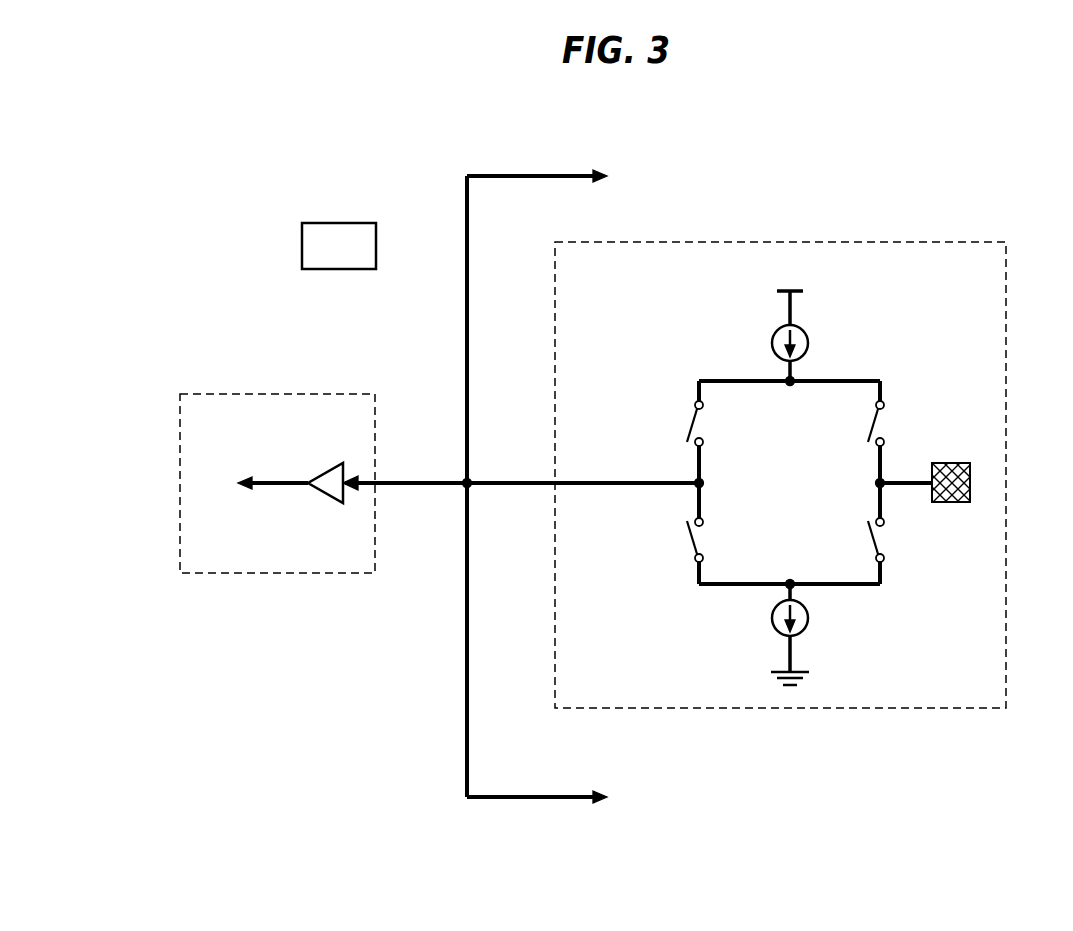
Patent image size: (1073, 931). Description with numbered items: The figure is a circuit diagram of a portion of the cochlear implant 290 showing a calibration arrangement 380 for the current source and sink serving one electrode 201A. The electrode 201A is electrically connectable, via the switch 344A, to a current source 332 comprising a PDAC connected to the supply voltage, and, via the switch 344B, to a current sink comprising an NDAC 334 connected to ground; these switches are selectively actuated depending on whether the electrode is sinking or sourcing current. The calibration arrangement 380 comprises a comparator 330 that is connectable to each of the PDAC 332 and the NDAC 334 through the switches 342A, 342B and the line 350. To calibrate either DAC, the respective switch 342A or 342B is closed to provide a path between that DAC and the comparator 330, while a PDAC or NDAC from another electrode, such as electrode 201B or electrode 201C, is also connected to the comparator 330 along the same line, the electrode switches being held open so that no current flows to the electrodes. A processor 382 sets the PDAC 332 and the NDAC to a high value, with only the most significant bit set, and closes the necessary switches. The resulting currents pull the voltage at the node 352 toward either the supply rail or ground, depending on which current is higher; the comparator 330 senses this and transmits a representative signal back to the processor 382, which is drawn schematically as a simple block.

The cochlear implant 290 is at (362, 825).
The comparator 330 is at (250, 574).
The current source (PDAC) 332 is at (808, 340).
The NDAC (current sink) 334 is at (772, 624).
The switch 342A is at (690, 428).
The switch 342B is at (690, 538).
The switch 344A is at (872, 425).
The switch 344B is at (870, 540).
The line 350 is at (518, 488).
The node 352 is at (287, 483).
The calibration arrangement 380 is at (423, 352).
The processor 382 is at (334, 223).
The electrode 201A is at (970, 481).
The electrode 201B is at (600, 179).
The electrode 201C is at (600, 796).